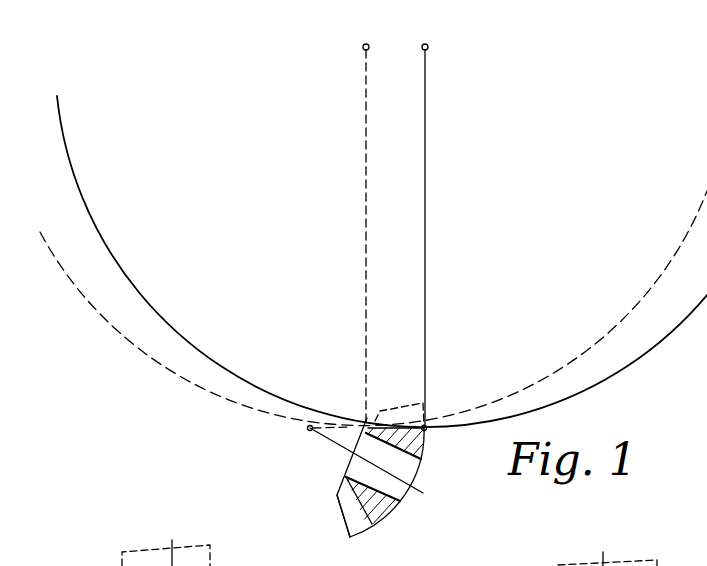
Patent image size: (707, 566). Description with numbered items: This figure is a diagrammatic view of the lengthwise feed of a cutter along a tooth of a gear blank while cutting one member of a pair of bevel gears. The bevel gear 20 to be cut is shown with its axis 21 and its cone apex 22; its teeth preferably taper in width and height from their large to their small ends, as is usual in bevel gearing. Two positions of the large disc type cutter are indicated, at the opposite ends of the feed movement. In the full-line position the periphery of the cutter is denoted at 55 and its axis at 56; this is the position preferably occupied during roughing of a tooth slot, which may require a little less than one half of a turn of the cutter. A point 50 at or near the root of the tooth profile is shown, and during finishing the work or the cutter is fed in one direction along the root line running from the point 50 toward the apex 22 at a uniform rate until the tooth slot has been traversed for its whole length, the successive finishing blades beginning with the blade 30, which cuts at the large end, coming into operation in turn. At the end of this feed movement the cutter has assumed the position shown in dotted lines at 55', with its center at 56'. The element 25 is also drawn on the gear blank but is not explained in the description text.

The cutting tool body 20 is at (390, 515).
The tool axis line 21 is at (423, 493).
The center of curvature of cutting edge 22 is at (309, 431).
The bevel face of tool tip 25 is at (355, 522).
The workpiece 30 is at (389, 553).
The pivot point 50 is at (426, 431).
The arc path of tool 55 is at (382, 261).
The alternate arc path of tool 55' is at (373, 308).
The radius line 56 is at (445, 226).
The alternate radius line 56' is at (340, 233).